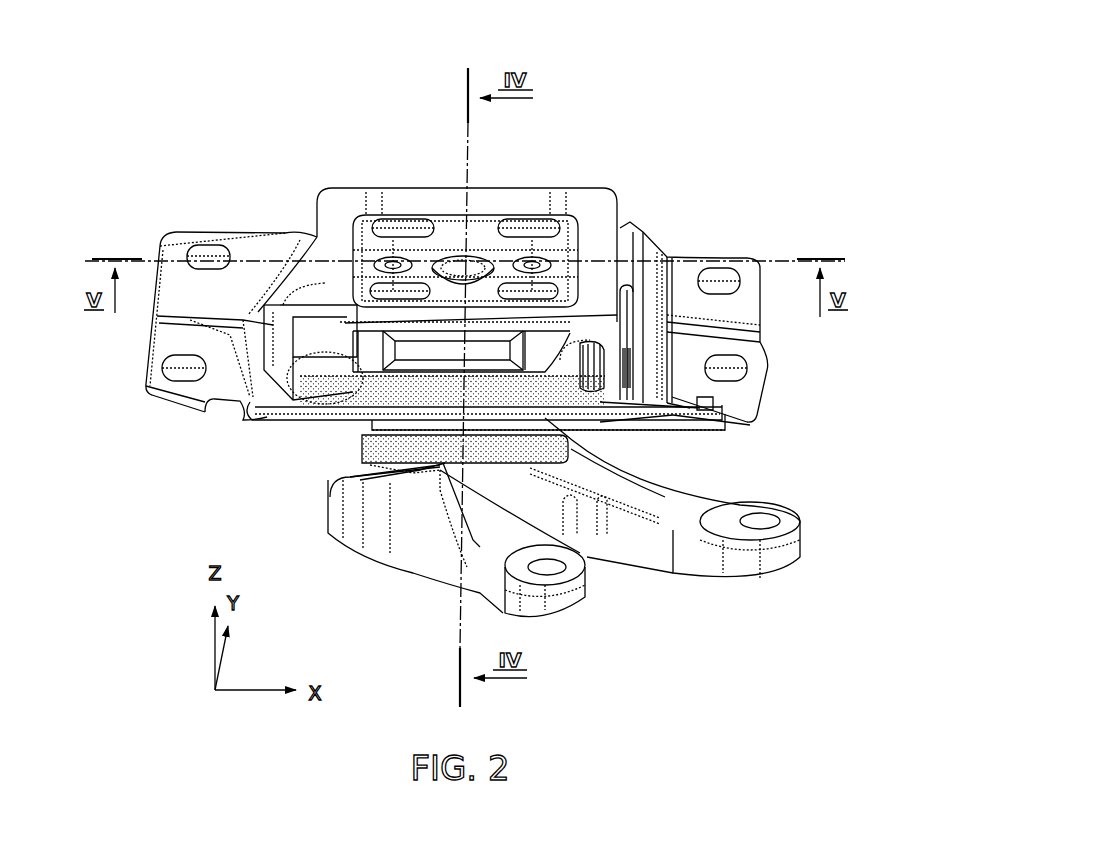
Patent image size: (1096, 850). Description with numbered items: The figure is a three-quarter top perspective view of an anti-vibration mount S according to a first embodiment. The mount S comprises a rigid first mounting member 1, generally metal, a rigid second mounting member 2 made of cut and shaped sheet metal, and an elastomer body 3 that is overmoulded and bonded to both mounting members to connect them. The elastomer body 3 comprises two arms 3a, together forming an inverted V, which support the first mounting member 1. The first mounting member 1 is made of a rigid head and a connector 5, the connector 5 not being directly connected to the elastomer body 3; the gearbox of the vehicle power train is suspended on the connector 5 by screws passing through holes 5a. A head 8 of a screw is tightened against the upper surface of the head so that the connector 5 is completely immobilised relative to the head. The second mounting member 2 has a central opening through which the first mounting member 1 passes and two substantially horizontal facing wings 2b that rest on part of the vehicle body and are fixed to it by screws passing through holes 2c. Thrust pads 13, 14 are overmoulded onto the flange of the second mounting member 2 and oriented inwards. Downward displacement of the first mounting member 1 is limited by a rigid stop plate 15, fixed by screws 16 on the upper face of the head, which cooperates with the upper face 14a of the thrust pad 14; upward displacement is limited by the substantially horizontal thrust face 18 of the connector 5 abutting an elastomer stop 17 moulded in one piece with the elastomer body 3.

The anti-vibration mount S is at (683, 90).
The first mounting member 1 is at (549, 162).
The second mounting member 2 is at (689, 242).
The wings 2b is at (180, 290).
The holes 2c is at (176, 383).
The elastomer body 3 is at (358, 386).
The arms 3a is at (617, 432).
The connector 5 is at (393, 552).
The holes 5a is at (352, 488).
The head of the screw 8 is at (463, 266).
The thrust pad 13 is at (565, 345).
The thrust pad 14 is at (298, 383).
The upper face of the stop 14a is at (312, 298).
The stop plate 15 is at (608, 212).
The screws 16 is at (532, 260).
The elastomer stop 17 is at (433, 457).
The thrust face 18 is at (413, 470).